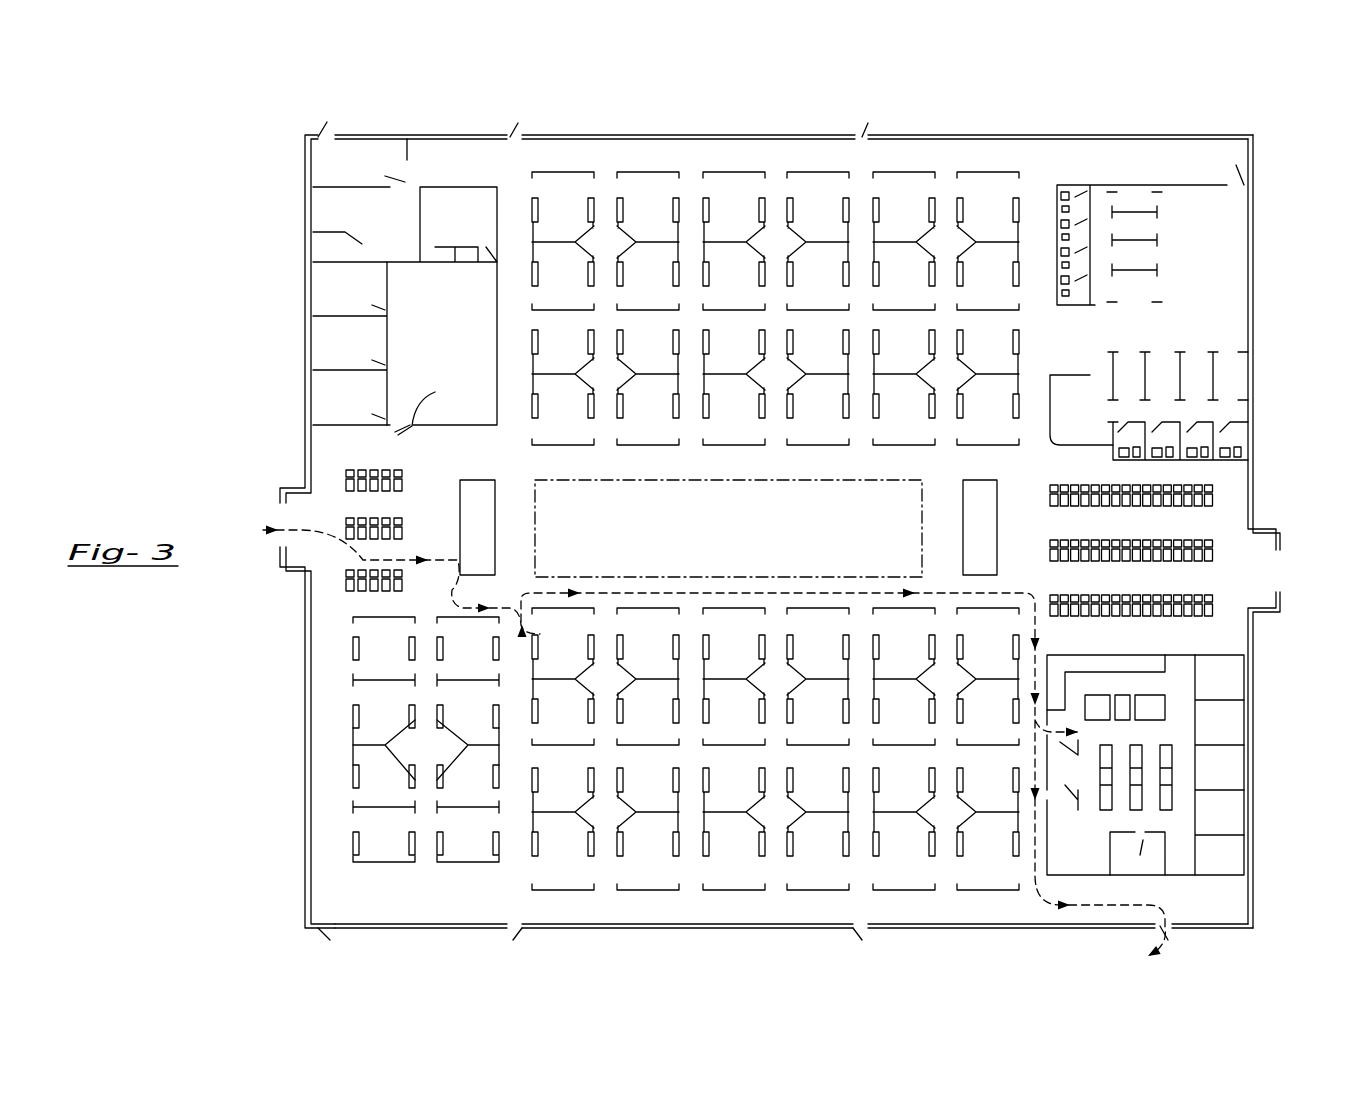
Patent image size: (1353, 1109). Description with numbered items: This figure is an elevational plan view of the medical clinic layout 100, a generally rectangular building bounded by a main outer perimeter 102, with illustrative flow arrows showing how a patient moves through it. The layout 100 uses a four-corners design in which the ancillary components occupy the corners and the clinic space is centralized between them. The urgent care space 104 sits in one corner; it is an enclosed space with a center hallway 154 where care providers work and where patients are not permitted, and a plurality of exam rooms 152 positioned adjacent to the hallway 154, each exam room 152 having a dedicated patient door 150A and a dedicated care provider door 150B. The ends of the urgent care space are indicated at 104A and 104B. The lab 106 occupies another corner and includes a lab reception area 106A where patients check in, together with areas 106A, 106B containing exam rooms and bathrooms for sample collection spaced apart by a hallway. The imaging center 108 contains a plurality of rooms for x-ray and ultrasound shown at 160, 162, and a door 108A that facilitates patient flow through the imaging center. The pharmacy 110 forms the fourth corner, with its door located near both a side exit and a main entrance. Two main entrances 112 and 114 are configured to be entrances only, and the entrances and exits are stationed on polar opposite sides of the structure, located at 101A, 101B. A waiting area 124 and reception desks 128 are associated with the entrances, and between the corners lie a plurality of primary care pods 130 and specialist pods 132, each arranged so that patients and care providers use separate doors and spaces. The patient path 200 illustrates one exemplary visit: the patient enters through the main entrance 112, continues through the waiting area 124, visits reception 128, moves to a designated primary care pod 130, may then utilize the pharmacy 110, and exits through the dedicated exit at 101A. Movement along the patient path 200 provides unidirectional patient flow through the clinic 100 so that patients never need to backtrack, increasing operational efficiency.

The clinic layout 100 is at (805, 505).
The exit side 101A is at (324, 932).
The entrance side 101B is at (512, 125).
The main outer perimeter 102 is at (1090, 133).
The urgent care space 104 is at (370, 746).
The first end of shelving module 104A is at (430, 632).
The second end of shelving module 104B is at (425, 862).
The lab 106 is at (1202, 230).
The lab reception area 106A is at (1098, 205).
The lab sample collection area 106B is at (1232, 408).
The imaging center 108 is at (405, 348).
The imaging center door 108A is at (434, 403).
The pharmacy 110 is at (1182, 719).
The main entrance 112 is at (302, 530).
The main entrance 114 is at (1265, 602).
The waiting area 124 is at (417, 498).
The reception desk 128 is at (491, 530).
The primary care pod 130 is at (586, 888).
The specialist pod 132 is at (586, 160).
The patient door 150A is at (350, 692).
The care provider door 150B is at (410, 825).
The exam room 152 is at (481, 724).
The center hallway 154 is at (437, 755).
The imaging room 160 is at (364, 219).
The imaging room 162 is at (361, 298).
The patient path 200 is at (276, 540).